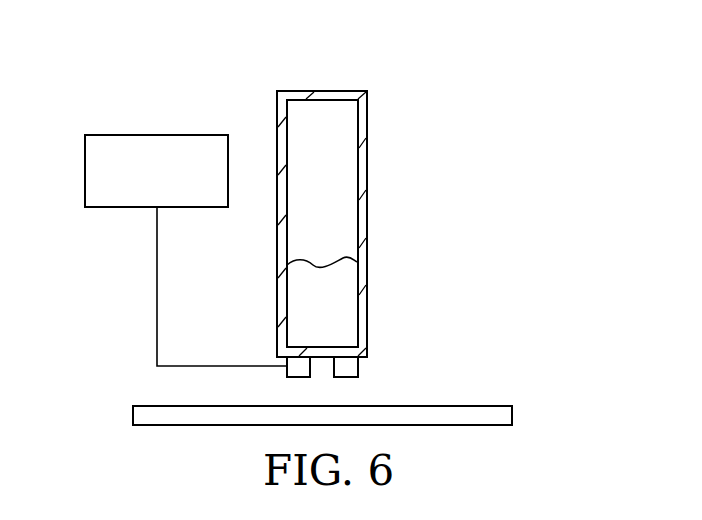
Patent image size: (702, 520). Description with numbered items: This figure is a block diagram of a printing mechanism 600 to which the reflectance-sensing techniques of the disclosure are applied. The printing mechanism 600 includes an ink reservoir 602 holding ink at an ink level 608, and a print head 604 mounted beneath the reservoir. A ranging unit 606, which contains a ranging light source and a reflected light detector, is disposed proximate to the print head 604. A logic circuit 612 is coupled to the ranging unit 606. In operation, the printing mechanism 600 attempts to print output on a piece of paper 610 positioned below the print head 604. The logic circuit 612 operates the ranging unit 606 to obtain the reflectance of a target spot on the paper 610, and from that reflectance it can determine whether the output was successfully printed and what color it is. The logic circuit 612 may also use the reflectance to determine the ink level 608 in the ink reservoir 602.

The printing mechanism 600 is at (485, 71).
The ink reservoir 602 is at (368, 175).
The print head 604 is at (358, 366).
The ranging unit 606 is at (295, 378).
The ink level 608 is at (300, 302).
The paper 610 is at (133, 414).
The logic circuit 612 is at (144, 135).